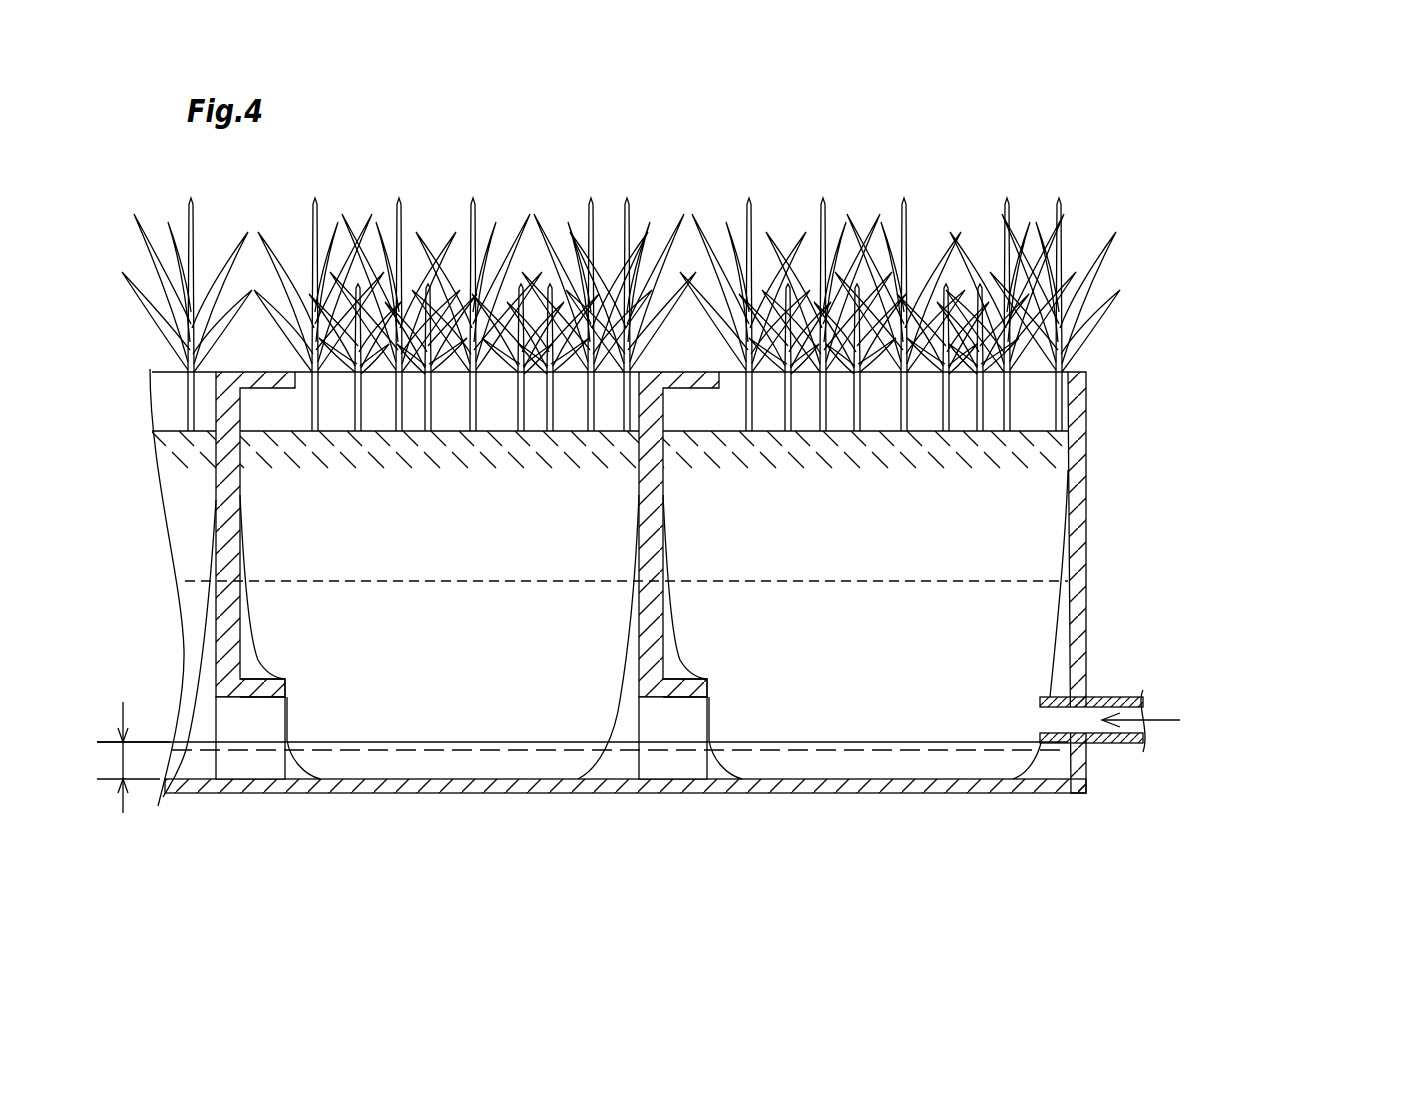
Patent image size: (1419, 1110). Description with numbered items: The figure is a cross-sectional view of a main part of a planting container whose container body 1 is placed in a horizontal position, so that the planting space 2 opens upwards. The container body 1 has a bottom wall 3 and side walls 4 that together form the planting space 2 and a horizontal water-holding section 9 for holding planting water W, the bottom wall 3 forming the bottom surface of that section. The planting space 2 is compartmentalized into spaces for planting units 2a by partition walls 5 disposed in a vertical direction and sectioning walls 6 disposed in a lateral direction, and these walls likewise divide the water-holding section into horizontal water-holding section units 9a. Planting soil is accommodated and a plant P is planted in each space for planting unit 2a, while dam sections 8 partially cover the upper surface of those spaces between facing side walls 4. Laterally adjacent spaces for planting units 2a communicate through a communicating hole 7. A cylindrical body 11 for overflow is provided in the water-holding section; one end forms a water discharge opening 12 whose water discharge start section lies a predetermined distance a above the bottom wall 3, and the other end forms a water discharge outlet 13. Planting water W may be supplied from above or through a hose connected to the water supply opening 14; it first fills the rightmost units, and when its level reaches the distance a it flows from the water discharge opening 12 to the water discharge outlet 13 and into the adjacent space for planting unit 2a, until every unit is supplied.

The container body 1 is at (1146, 335).
The planting space 2 is at (617, 476).
The space for planting unit 2a is at (487, 534).
The bottom wall 3 is at (580, 795).
The side wall 4 is at (1087, 581).
The partition wall 5 is at (270, 477).
The sectioning wall 6 is at (243, 546).
The communicating hole 7 is at (534, 607).
The dam section 8 is at (679, 372).
The horizontal water-holding section 9 is at (582, 688).
The horizontal water-holding section unit 9a is at (416, 740).
The cylindrical body 11 is at (256, 678).
The water discharge opening 12 is at (288, 727).
The water discharge outlet 13 is at (216, 728).
The water supply opening 14 is at (1097, 722).
The plant P is at (400, 218).
The planting water W is at (504, 742).
The predetermined distance a is at (133, 761).